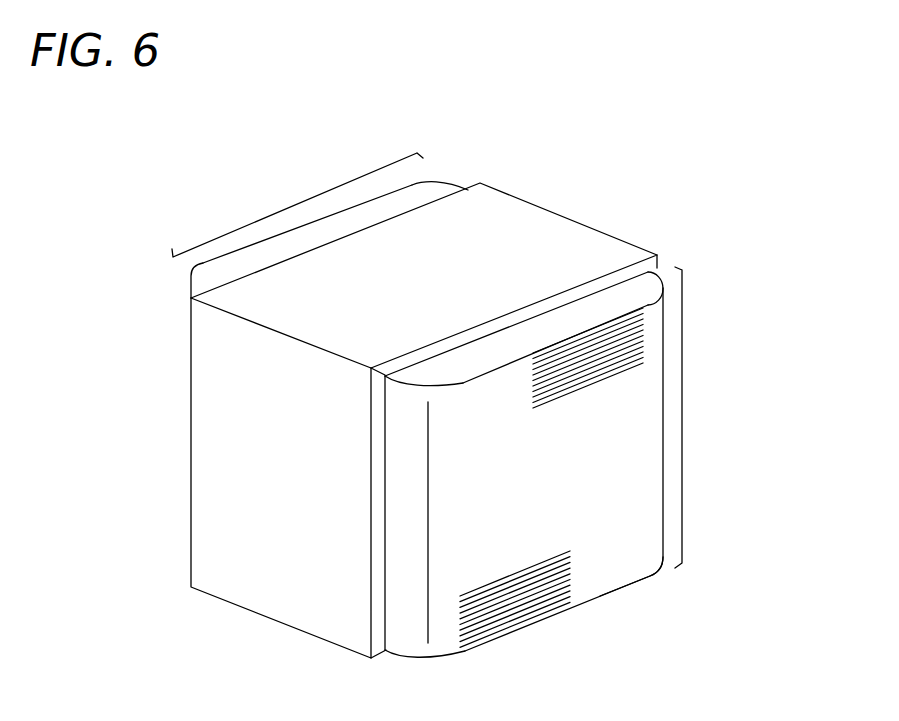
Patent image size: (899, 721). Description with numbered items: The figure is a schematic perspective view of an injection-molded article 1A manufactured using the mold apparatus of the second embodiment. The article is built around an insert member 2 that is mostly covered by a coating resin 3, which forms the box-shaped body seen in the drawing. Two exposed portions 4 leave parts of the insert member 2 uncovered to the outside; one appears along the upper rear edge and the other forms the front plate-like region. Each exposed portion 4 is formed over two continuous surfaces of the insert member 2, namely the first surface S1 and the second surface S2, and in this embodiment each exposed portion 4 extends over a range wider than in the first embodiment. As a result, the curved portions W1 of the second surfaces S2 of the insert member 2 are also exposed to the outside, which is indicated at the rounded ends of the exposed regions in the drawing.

The injection-molded article 1A is at (775, 182).
The insert member 2 is at (612, 593).
The coating resin 3 is at (510, 212).
The exposed portion 4 is at (337, 182).
The curved portion W1 is at (432, 181).
The first surface S1 is at (301, 249).
The second surface S2 is at (573, 503).